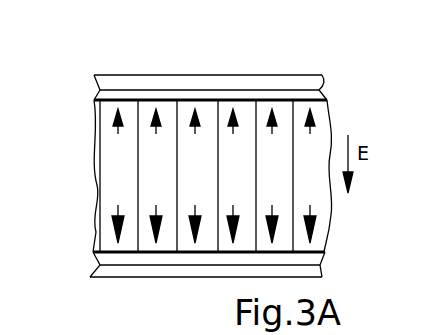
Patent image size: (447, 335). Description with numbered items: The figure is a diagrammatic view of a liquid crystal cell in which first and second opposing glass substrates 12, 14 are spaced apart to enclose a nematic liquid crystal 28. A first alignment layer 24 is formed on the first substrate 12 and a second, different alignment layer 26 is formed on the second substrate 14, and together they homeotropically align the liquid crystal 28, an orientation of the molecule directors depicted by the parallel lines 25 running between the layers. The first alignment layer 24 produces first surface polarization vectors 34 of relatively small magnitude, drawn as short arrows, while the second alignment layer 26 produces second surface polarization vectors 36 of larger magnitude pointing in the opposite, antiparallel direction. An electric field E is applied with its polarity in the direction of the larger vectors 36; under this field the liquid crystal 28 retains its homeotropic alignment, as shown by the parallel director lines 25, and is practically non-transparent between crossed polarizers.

The first glass substrate 12 is at (172, 80).
The second glass substrate 14 is at (150, 272).
The first alignment layer 24 is at (208, 97).
The second alignment layer 26 is at (223, 260).
The liquid crystal 28 is at (158, 166).
The lines representing liquid crystal directors 25 is at (138, 182).
The first surface polarization vectors 34 is at (110, 127).
The second surface polarization vectors 36 is at (118, 210).